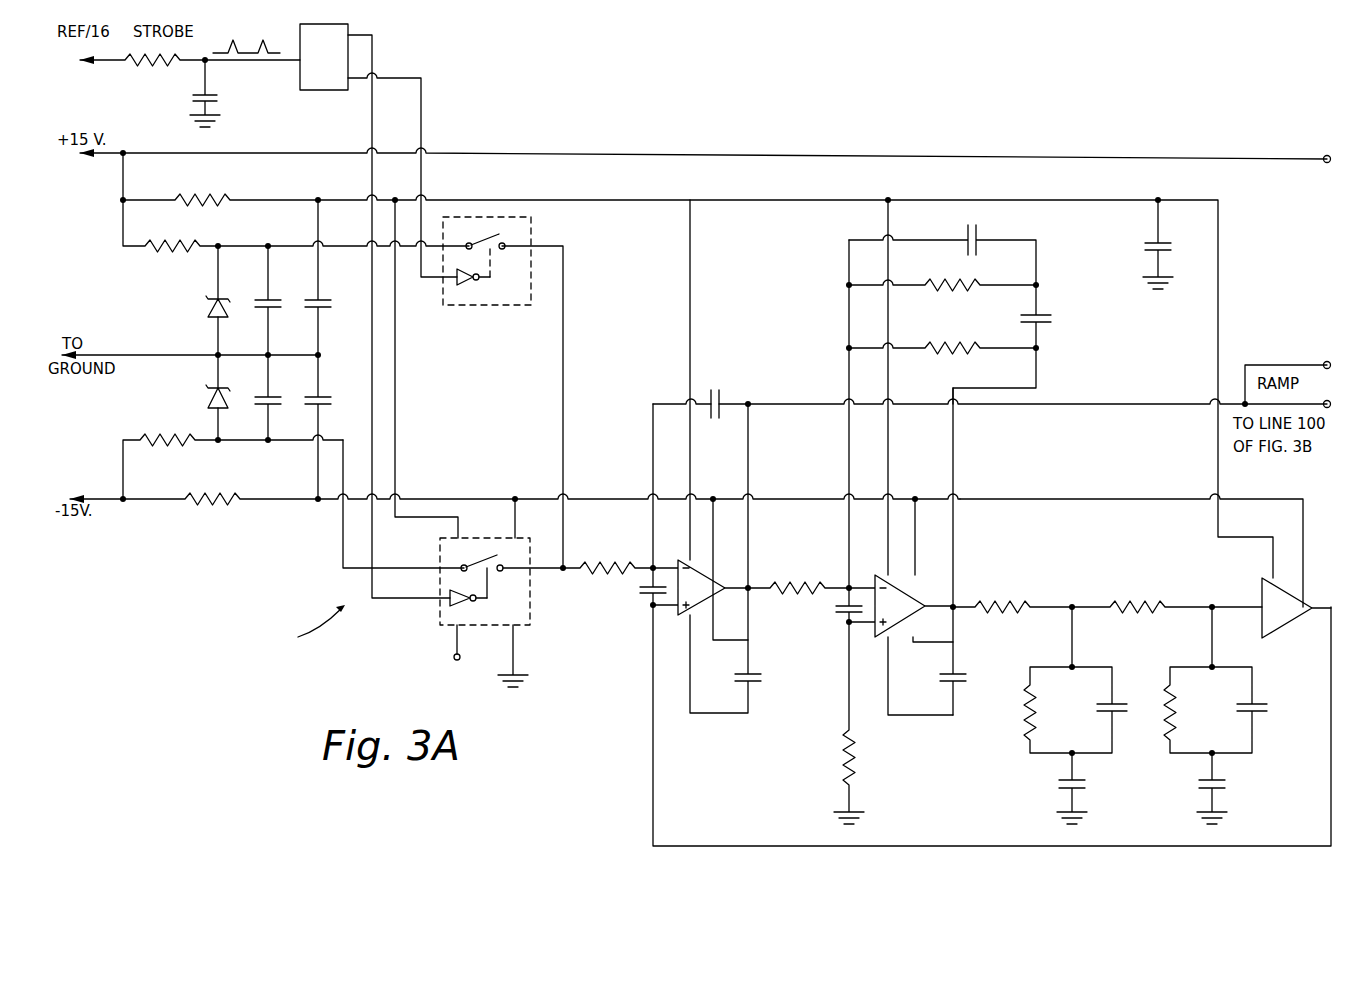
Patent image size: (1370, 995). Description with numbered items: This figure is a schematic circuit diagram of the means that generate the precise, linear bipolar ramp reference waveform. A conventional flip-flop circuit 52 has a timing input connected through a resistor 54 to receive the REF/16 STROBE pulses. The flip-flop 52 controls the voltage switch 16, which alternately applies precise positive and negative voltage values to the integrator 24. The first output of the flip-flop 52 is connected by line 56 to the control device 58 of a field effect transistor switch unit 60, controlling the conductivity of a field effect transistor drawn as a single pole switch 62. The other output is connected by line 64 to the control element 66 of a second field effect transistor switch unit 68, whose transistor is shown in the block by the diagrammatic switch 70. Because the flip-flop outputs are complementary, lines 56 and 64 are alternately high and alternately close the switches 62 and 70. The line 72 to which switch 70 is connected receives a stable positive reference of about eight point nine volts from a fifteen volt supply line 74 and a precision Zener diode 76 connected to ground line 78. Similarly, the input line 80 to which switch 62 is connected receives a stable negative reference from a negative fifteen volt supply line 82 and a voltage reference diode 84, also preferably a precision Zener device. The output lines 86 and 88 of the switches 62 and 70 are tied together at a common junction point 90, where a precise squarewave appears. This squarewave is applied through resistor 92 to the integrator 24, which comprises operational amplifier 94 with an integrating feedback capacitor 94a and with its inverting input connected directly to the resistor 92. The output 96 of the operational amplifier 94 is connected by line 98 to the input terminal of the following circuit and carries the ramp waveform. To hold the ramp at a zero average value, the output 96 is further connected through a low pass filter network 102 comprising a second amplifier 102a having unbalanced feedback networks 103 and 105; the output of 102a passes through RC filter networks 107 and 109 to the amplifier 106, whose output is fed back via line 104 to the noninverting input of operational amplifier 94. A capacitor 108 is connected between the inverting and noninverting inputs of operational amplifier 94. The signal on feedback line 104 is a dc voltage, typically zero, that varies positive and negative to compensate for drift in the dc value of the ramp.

The voltage switch 16 is at (303, 627).
The integrator 24 is at (762, 384).
The flip-flop circuit 52 is at (305, 72).
The resistor 54 is at (150, 68).
The line 56 is at (372, 120).
The control device 58 is at (448, 602).
The field effect transistor switch unit 60 is at (473, 626).
The single pole switch 62 is at (497, 560).
The line 64 is at (421, 112).
The control element 66 is at (473, 282).
The second field effect transistor switch unit 68 is at (482, 306).
The switch 70 is at (500, 233).
The line 72 is at (348, 247).
The 15 volt supply line 74 is at (255, 153).
The precision Zener diode 76 is at (205, 305).
The ground line 78 is at (125, 355).
The input line 80 is at (343, 550).
The −15 volt supply line 82 is at (103, 499).
The voltage reference diode 84 is at (205, 400).
The output line 86 is at (545, 570).
The output line 88 is at (563, 353).
The common junction point 90 is at (563, 568).
The resistor 92 is at (612, 568).
The operational amplifier 94 is at (712, 592).
The integrating feedback capacitor 94a is at (715, 390).
The output 96 is at (768, 588).
The line 98 is at (1085, 499).
The low pass filter network 102 is at (1037, 583).
The second amplifier 102a is at (920, 602).
The feedback network 103 is at (1036, 262).
The feedback line 104 is at (1331, 752).
The feedback network 105 is at (925, 716).
The amplifier 106 is at (1275, 600).
The RC filter network 107 is at (1095, 667).
The capacitor 108 is at (649, 596).
The RC filter network 109 is at (1235, 667).